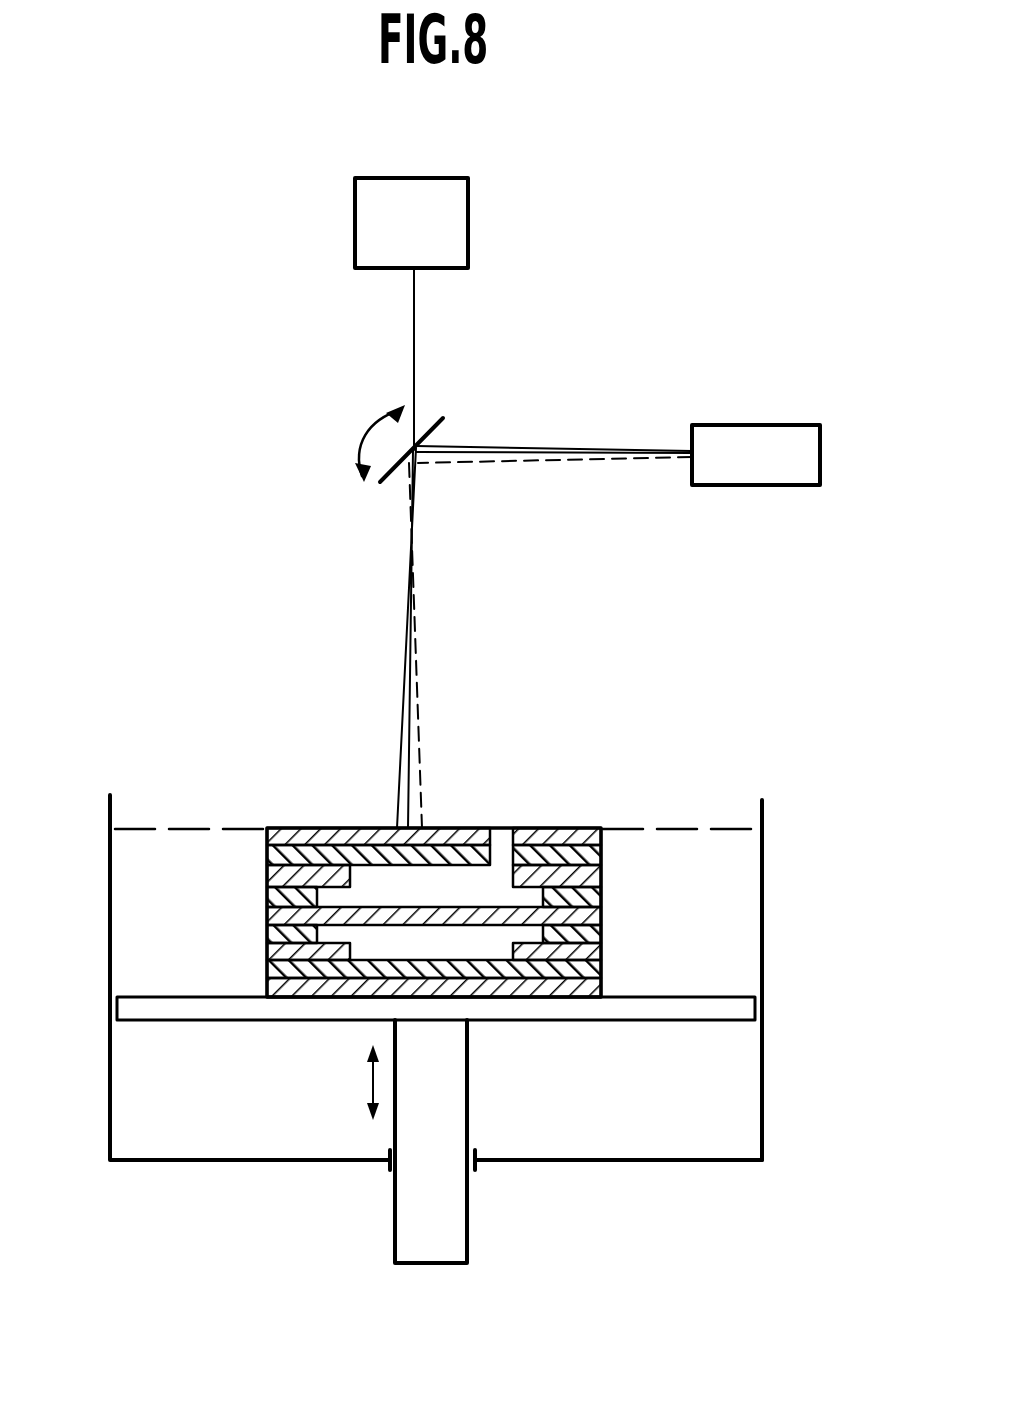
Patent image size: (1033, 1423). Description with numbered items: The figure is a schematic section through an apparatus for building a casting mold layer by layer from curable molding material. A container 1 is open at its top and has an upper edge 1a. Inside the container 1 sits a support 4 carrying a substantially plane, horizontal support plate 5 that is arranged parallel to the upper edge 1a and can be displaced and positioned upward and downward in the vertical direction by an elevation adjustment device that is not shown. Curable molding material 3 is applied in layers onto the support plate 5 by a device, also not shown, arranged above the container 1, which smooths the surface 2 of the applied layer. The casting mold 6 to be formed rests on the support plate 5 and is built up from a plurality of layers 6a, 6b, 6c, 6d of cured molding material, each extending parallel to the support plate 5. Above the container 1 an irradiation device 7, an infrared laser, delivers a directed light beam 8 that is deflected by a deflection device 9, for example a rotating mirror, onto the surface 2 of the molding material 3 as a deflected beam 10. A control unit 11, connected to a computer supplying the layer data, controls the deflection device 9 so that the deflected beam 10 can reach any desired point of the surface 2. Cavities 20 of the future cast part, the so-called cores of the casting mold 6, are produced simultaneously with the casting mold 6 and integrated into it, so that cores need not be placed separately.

The container 1 is at (765, 1115).
The upper edge 1a is at (763, 810).
The surface 2 is at (630, 830).
The curable molding material 3 is at (135, 942).
The support 4 is at (495, 1102).
The support plate 5 is at (716, 997).
The casting mold 6 is at (499, 952).
The layer 6a is at (600, 1000).
The layer 6b is at (602, 972).
The layer 6c is at (602, 950).
The layer 6d is at (602, 930).
The irradiation device 7 is at (820, 452).
The directed light beam 8 is at (563, 447).
The deflection device 9 is at (431, 419).
The deflected beam 10 is at (407, 668).
The control unit 11 is at (468, 221).
The cavities 20 is at (272, 895).